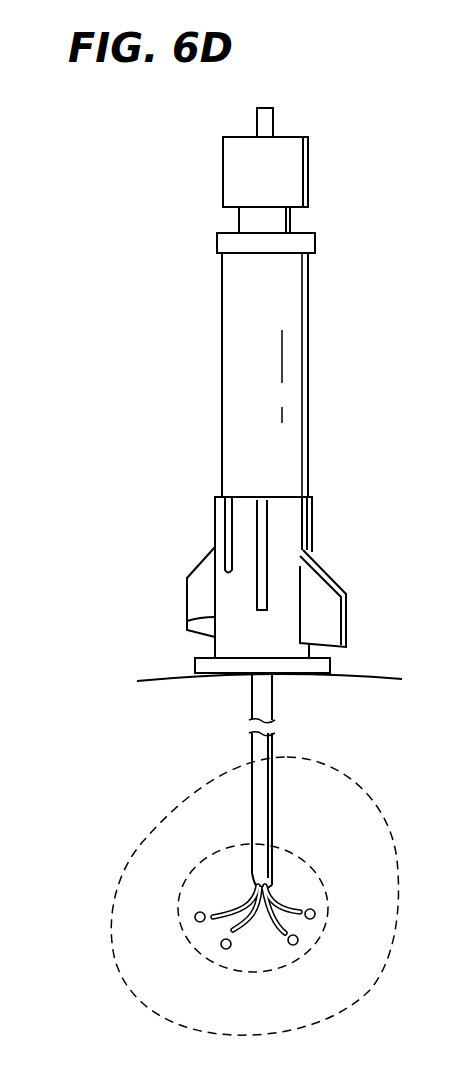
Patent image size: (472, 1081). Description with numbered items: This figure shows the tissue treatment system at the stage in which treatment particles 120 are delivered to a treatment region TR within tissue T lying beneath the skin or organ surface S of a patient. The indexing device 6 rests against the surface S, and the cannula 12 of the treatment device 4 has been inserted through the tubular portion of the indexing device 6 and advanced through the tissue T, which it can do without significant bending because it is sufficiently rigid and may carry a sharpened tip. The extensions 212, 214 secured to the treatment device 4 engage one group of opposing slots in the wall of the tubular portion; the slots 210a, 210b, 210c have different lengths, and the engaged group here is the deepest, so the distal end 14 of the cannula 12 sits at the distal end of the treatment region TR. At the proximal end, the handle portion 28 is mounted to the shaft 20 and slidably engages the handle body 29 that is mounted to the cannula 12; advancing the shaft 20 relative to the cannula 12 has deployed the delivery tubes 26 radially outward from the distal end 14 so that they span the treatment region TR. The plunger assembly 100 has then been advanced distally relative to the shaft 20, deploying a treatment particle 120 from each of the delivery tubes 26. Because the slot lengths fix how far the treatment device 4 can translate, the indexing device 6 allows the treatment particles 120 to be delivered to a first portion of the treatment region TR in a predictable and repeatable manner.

The plunger assembly 100 is at (273, 122).
The handle portion 28 is at (308, 190).
The shaft 20 is at (290, 222).
The treatment device 4 is at (308, 345).
The handle body 29 is at (308, 413).
The indexing device 6 is at (187, 623).
The extension 214 is at (187, 595).
The extension 212 is at (338, 572).
The slot 210a is at (312, 512).
The slot 210b is at (262, 500).
The slot 210c is at (228, 525).
The surface S is at (370, 676).
The cannula 12 is at (272, 776).
The tissue T is at (352, 808).
The treatment region TR is at (224, 880).
The distal end 14 is at (272, 877).
The delivery tubes 26 is at (294, 931).
The treatment particle 120 is at (294, 945).